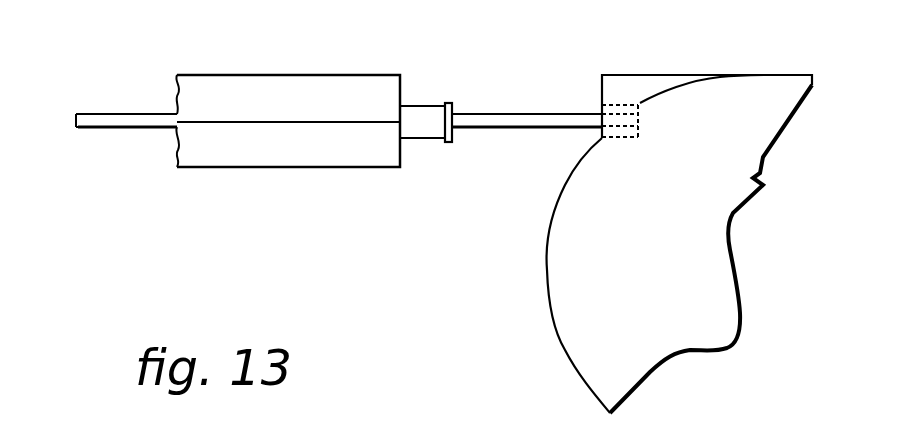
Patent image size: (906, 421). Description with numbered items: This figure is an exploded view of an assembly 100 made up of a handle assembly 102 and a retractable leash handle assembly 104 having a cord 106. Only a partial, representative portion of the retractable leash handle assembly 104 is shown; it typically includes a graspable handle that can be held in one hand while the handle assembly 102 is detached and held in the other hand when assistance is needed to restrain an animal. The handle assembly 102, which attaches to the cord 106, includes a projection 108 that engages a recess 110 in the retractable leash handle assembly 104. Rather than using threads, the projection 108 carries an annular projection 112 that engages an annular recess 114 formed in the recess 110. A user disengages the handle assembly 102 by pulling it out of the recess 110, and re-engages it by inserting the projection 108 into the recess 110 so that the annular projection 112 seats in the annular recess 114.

The assembly 100 is at (114, 216).
The handle assembly 102 is at (277, 167).
The retractable leash handle assembly 104 is at (662, 75).
The cord 106 is at (148, 114).
The projection 108 is at (418, 140).
The recess 110 is at (602, 108).
The annular projection 112 is at (447, 103).
The annular recess 114 is at (628, 134).